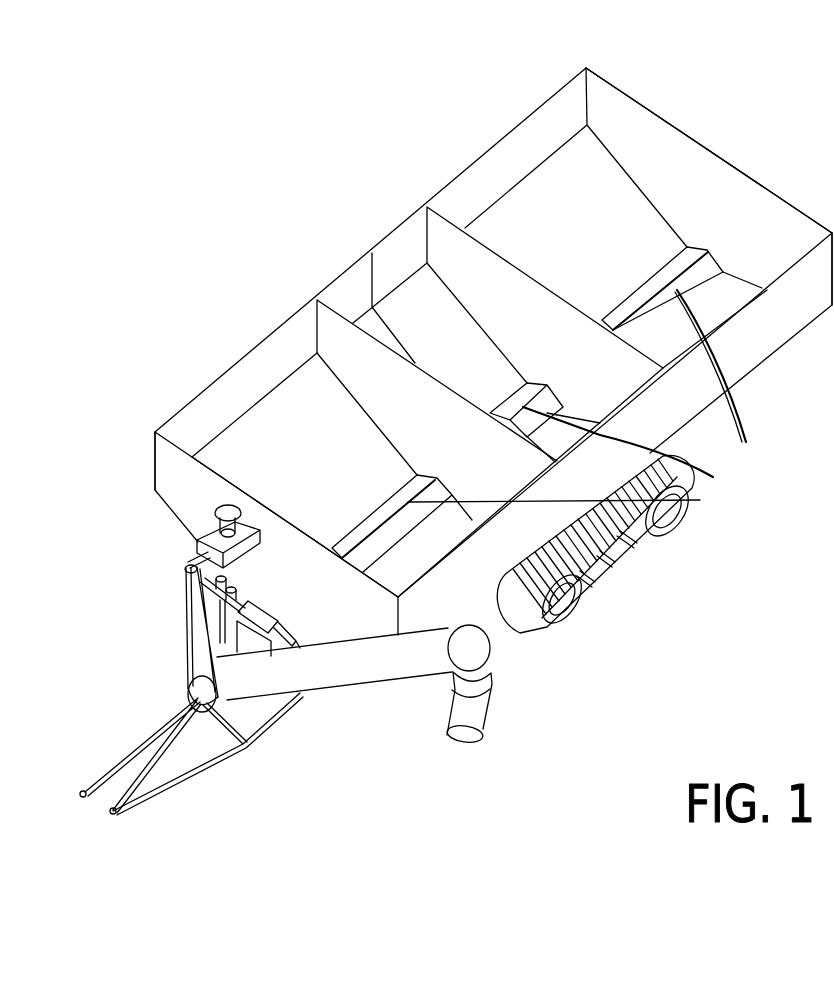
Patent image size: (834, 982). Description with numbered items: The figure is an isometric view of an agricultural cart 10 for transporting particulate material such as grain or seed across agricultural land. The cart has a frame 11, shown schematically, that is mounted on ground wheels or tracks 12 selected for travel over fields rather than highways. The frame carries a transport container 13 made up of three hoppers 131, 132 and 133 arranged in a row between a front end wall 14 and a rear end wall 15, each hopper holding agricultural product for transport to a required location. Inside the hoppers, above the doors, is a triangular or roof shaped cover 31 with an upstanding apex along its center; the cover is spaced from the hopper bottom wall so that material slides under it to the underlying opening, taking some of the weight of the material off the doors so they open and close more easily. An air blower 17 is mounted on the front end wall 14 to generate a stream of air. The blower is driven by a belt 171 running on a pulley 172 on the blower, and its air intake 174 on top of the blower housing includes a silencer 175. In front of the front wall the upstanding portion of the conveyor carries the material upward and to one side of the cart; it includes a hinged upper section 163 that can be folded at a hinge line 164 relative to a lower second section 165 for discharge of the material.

The agricultural cart 10 is at (413, 152).
The frame 11 is at (290, 717).
The ground wheels or tracks 12 is at (558, 612).
The transport container 13 is at (261, 316).
The hopper 131 is at (237, 434).
The hopper 132 is at (422, 302).
The hopper 133 is at (553, 182).
The front end wall 14 is at (178, 498).
The rear end wall 15 is at (700, 157).
The air blower 17 is at (253, 549).
The belt 171 is at (185, 648).
The pulley 172 is at (183, 568).
The air intake 174 is at (243, 530).
The silencer 175 is at (230, 513).
The hinged upper section 163 is at (408, 675).
The hinge line 164 is at (341, 642).
The lower second section 165 is at (247, 693).
The cover 31 is at (700, 502).